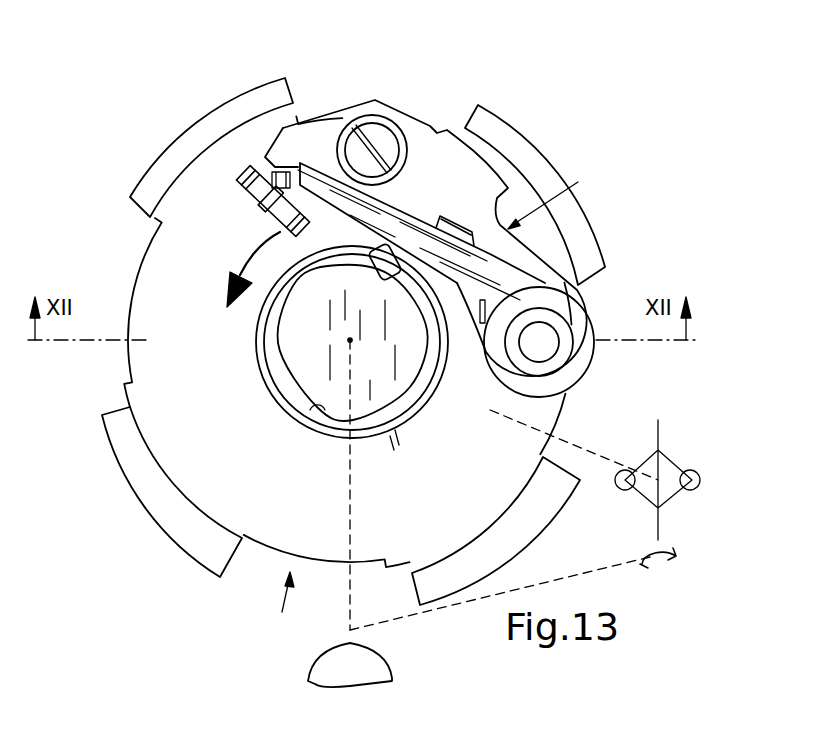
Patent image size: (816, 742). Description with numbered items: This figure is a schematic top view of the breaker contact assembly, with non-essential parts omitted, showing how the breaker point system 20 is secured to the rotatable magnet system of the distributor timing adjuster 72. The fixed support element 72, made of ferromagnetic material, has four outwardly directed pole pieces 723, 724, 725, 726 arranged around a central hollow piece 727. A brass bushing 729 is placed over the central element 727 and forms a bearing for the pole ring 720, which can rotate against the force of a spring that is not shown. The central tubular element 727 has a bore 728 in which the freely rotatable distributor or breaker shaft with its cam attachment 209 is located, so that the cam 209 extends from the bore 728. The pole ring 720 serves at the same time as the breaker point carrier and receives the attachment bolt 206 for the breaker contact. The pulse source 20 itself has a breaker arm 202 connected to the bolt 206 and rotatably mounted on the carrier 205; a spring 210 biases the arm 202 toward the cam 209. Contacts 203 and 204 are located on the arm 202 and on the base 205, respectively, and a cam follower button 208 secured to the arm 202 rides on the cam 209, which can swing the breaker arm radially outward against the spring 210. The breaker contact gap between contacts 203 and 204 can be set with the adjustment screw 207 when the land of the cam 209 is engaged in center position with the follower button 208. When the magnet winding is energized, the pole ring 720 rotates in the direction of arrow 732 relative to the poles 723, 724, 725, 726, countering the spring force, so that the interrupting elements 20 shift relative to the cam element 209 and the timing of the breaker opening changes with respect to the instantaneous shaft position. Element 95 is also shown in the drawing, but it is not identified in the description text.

The breaker point system 20 is at (600, 187).
The distributor timing adjuster 72 is at (290, 638).
The stop member 95 is at (377, 662).
The breaker arm 202 is at (385, 217).
The contact 203 is at (285, 172).
The contact 204 is at (268, 173).
The carrier 205 is at (423, 157).
The attachment bolt 206 is at (550, 347).
The adjustment screw 207 is at (385, 137).
The cam follower button 208 is at (372, 253).
The cam 209 is at (403, 368).
The spring 210 is at (492, 233).
The pole ring 720 is at (147, 284).
The pole piece 723 is at (170, 162).
The pole piece 724 is at (193, 545).
The pole piece 725 is at (523, 533).
The pole piece 726 is at (527, 148).
The central hollow piece 727 is at (283, 393).
The bore 728 is at (317, 411).
The brass bushing 729 is at (398, 430).
The arrow 732 is at (235, 268).